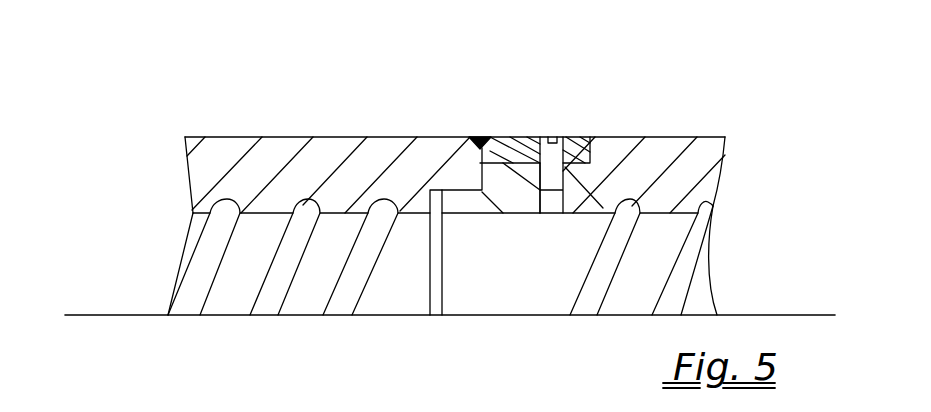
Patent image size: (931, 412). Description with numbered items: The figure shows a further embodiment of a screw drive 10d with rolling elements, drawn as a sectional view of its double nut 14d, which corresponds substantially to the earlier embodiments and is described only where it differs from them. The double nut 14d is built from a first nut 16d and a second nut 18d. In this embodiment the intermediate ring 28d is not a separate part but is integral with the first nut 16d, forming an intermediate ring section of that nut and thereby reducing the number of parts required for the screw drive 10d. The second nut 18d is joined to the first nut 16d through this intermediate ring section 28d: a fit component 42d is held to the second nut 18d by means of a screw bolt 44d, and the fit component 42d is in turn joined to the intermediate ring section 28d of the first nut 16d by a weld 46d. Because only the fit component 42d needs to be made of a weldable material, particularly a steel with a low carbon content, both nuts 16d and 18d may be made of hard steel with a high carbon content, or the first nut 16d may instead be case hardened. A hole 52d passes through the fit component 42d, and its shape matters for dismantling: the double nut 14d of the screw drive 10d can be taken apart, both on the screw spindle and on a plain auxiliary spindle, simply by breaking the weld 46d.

The screw drive 10d is at (138, 87).
The double nut 14d is at (742, 56).
The first nut 16d is at (228, 144).
The second nut 18d is at (707, 156).
The intermediate ring 28d is at (460, 163).
The fit component 42d is at (517, 132).
The screw bolt 44d is at (601, 132).
The weld 46d is at (482, 134).
The hole 52d is at (565, 173).